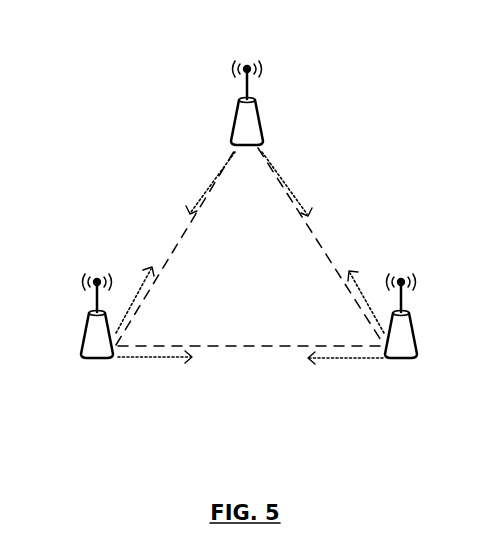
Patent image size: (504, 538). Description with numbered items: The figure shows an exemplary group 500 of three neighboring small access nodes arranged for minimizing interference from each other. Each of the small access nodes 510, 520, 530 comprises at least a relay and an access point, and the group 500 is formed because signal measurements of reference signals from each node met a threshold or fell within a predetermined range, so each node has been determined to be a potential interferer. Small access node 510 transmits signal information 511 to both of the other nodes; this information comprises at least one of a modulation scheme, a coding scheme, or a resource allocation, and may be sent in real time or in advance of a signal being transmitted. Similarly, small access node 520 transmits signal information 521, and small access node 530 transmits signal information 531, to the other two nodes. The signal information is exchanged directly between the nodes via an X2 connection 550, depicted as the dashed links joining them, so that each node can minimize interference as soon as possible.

The group of neighboring small access nodes 500 is at (378, 73).
The small access node 510 is at (85, 352).
The signal information 511 is at (143, 275).
The small access node 520 is at (235, 124).
The signal information 521 is at (213, 177).
The small access node 530 is at (416, 350).
The signal information 531 is at (362, 292).
The X2 connection 550 is at (228, 345).